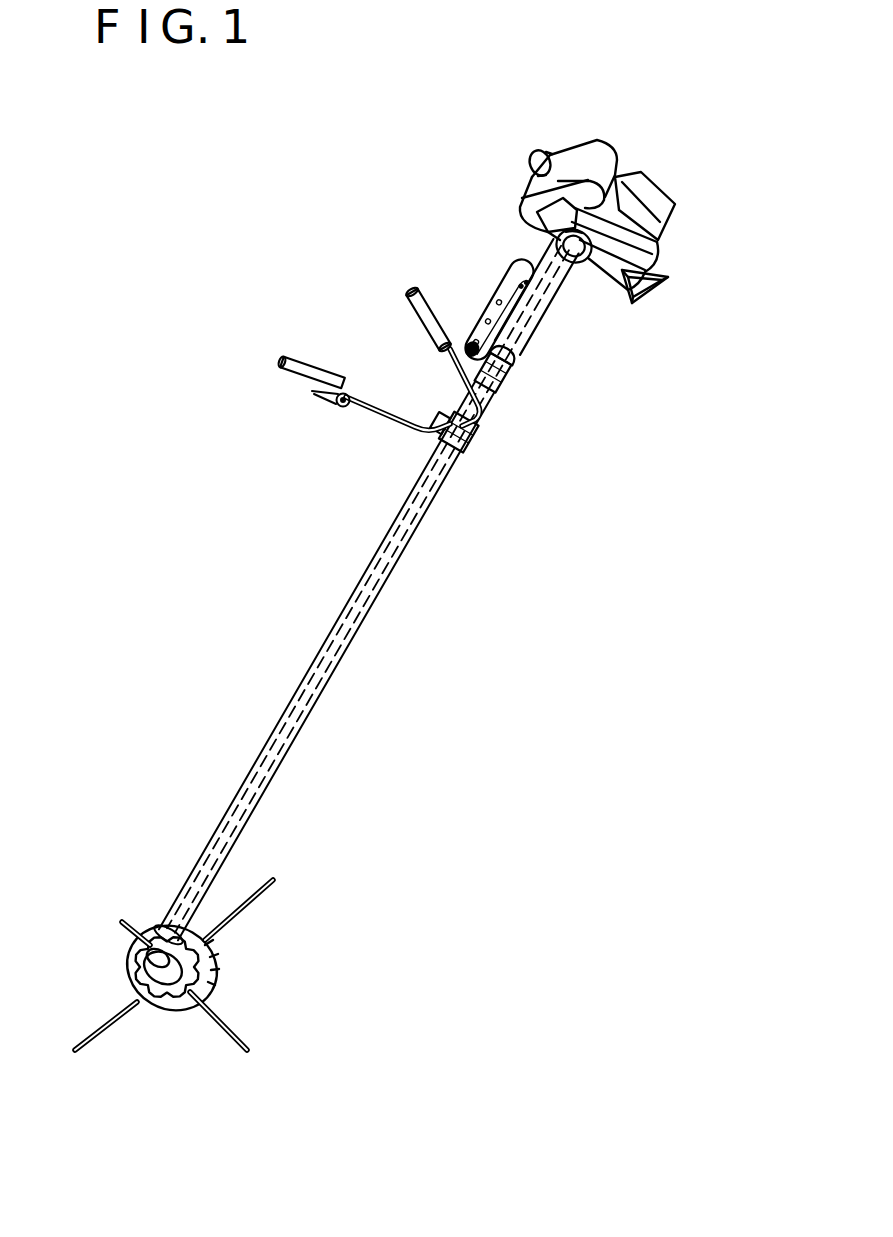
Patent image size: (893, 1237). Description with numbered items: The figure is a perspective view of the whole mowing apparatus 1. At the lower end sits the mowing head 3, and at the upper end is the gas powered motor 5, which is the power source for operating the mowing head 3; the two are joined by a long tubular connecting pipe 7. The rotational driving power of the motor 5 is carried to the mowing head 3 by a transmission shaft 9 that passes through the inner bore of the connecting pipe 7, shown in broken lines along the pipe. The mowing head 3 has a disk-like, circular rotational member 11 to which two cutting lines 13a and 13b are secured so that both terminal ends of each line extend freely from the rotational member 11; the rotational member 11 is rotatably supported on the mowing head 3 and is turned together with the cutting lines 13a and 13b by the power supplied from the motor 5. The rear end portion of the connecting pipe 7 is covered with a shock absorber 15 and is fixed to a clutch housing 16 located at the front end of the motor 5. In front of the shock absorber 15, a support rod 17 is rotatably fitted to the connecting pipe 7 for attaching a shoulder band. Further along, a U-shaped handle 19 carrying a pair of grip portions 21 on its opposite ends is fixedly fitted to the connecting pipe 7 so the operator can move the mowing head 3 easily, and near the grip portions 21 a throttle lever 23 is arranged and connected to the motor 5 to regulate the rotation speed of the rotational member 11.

The mowing apparatus 1 is at (145, 632).
The mowing head 3 is at (136, 1036).
The gas powered motor 5 is at (622, 175).
The connecting pipe 7 is at (352, 633).
The transmission shaft 9 is at (407, 543).
The rotational member 11 is at (177, 1010).
The cutting line 13a is at (107, 1027).
The cutting line 13b is at (257, 913).
The shock absorber 15 is at (566, 304).
The clutch housing 16 is at (556, 241).
The support rod 17 is at (485, 303).
The U-shaped handle 19 is at (388, 420).
The grip portions 21 is at (300, 352).
The throttle lever 23 is at (335, 405).